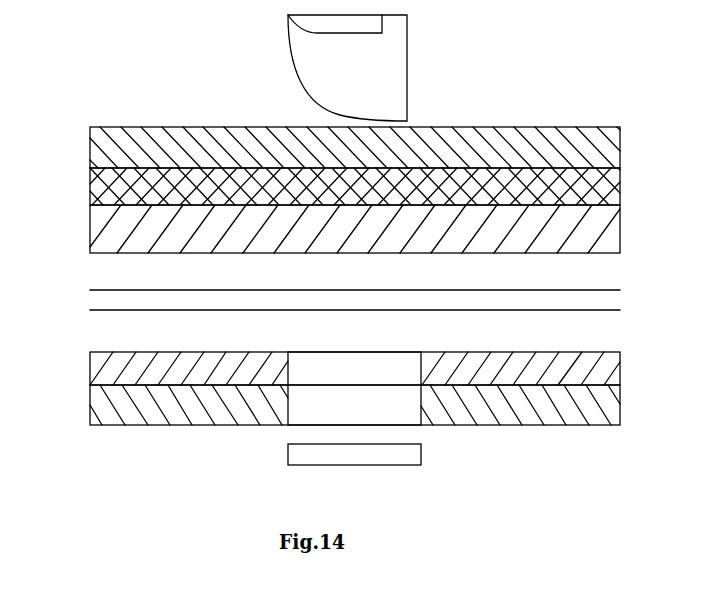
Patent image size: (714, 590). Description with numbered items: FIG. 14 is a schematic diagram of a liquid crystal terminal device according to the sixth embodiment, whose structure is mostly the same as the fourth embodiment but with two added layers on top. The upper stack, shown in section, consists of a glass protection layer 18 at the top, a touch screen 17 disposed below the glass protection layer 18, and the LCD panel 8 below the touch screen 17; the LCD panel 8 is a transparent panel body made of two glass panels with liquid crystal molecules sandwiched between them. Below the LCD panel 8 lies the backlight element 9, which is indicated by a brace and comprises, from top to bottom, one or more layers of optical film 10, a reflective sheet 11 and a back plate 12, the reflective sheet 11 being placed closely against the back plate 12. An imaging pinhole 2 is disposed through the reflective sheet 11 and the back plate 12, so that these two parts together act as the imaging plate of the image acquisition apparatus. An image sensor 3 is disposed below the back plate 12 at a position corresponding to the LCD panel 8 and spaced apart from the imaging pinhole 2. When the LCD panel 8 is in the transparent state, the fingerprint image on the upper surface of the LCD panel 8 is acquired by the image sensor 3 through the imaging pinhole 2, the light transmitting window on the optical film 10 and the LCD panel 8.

The imaging pinhole 2 is at (368, 376).
The image sensor 3 is at (410, 458).
The LCD panel 8 is at (103, 235).
The backlight element 9 is at (35, 272).
The optical film 10 is at (113, 310).
The reflective sheet 11 is at (113, 372).
The back plate 12 is at (113, 407).
The touch screen 17 is at (105, 188).
The glass protection layer 18 is at (105, 148).